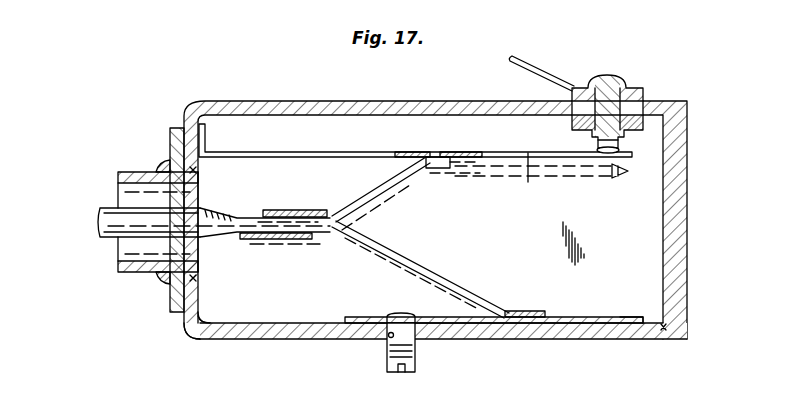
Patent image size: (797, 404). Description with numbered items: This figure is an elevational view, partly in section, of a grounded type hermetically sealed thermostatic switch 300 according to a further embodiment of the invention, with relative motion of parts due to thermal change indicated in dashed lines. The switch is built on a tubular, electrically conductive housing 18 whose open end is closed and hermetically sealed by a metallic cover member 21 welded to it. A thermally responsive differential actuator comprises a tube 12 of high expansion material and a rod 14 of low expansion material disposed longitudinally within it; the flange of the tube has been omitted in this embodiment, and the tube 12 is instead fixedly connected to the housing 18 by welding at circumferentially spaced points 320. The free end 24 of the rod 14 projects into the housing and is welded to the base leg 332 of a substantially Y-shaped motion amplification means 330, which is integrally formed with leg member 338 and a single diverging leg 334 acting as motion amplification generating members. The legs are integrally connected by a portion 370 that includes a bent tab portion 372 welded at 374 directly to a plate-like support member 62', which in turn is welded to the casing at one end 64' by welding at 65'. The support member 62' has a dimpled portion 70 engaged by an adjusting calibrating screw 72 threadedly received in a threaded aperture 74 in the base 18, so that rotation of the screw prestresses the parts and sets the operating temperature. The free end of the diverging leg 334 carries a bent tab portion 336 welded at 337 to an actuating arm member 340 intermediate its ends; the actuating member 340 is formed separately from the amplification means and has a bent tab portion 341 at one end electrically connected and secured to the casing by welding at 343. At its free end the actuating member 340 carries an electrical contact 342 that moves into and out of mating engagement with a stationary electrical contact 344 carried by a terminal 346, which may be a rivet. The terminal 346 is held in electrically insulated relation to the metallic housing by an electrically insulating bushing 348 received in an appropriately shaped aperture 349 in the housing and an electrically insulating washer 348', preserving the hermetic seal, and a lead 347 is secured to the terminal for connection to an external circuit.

The thermostatic switch 300 is at (212, 88).
The weld 343 is at (179, 130).
The bent tab portion 341 is at (205, 133).
The tube 12 is at (136, 172).
The welding points 320 is at (197, 170).
The rod 14 is at (102, 236).
The free end of rod 24 is at (250, 214).
The base leg 332 is at (292, 210).
The motion amplification means 330 is at (357, 191).
The weld 337 is at (440, 152).
The diverging leg 334 is at (385, 190).
The bent tab portion 336 is at (442, 169).
The actuating arm member 340 is at (514, 174).
The leg member 338 is at (437, 268).
The terminal 346 is at (601, 92).
The electrically insulating bushing 348 is at (649, 69).
The electrically insulating washer 348' is at (548, 85).
The aperture 349 is at (645, 112).
The lead 347 is at (534, 68).
The stationary electrical contact 344 is at (598, 144).
The electrical contact 342 is at (600, 158).
The cover member 21 is at (688, 219).
The housing 18 is at (273, 338).
The bent tab portion 372 is at (541, 316).
The weld 374 is at (536, 313).
The connecting portion 370 is at (507, 310).
The end of support member 64' is at (633, 302).
The support member 62' is at (584, 345).
The weld 65' is at (639, 344).
The dimpled portion 70 is at (405, 313).
The calibrating screw 72 is at (416, 360).
The threaded aperture 74 is at (389, 338).